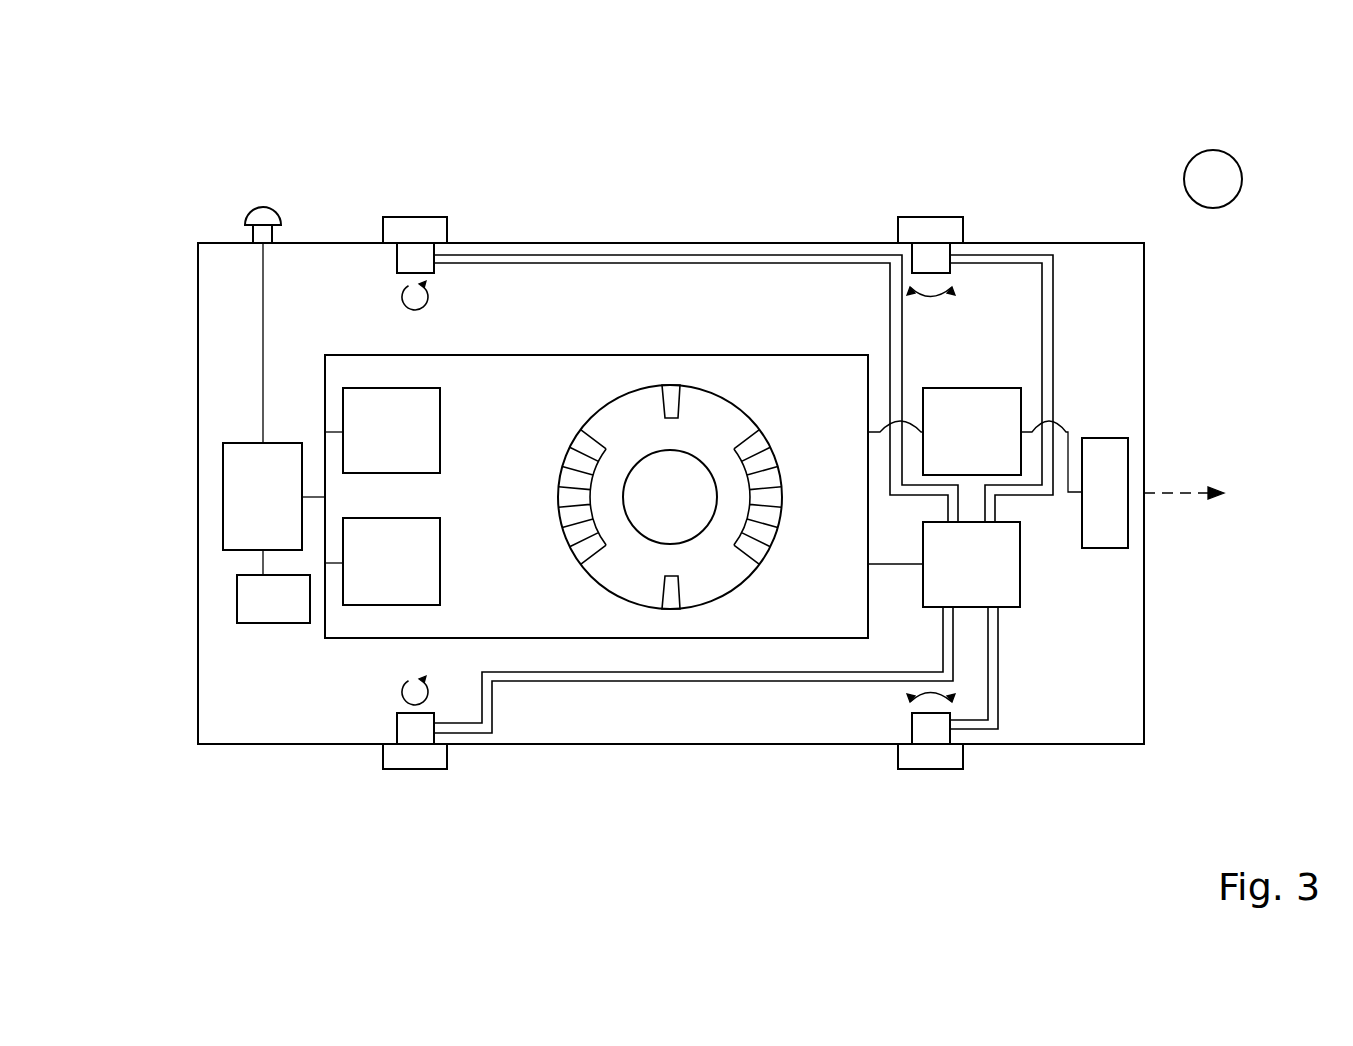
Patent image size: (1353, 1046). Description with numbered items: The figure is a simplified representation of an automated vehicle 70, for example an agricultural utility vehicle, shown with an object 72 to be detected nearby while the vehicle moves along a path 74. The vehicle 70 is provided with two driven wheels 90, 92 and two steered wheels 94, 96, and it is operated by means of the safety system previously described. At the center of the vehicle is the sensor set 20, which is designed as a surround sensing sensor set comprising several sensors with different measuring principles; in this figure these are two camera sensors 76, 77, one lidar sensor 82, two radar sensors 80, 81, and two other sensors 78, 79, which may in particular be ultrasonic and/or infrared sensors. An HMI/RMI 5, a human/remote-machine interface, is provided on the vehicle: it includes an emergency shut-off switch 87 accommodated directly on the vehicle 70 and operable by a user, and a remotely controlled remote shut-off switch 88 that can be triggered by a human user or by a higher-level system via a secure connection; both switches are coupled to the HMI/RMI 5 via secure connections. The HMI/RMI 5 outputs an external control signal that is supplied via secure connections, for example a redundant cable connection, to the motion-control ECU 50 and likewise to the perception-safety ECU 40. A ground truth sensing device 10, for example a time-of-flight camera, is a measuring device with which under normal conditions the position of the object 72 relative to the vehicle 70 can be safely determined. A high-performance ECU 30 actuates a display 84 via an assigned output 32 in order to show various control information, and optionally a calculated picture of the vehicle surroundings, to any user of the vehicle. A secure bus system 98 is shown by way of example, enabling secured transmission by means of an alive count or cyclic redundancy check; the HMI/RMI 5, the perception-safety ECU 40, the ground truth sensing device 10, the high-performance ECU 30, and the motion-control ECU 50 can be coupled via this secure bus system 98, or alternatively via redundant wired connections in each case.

The HMI/RMI 5 is at (223, 497).
The ground truth sensing device 10 is at (385, 605).
The sensor set 20 is at (625, 415).
The high-performance ECU 30 is at (1000, 388).
The output 32 is at (1067, 433).
The perception-safety ECU 40 is at (343, 410).
The motion-control ECU 50 is at (1020, 565).
The vehicle 70 is at (1073, 203).
The object 72 is at (1213, 178).
The path 74 is at (1178, 492).
The camera sensor 76 is at (758, 443).
The camera sensor 77 is at (757, 547).
The other sensor 78 is at (765, 460).
The other sensor 79 is at (763, 527).
The radar sensor 80 is at (772, 477).
The radar sensor 81 is at (770, 513).
The lidar sensor 82 is at (772, 495).
The display 84 is at (1128, 517).
The emergency shut-off switch 87 is at (270, 232).
The remote shut-off switch 88 is at (237, 598).
The driven wheel 90 is at (418, 255).
The driven wheel 92 is at (413, 728).
The steered wheel 94 is at (935, 258).
The steered wheel 96 is at (928, 727).
The secure bus system 98 is at (557, 352).